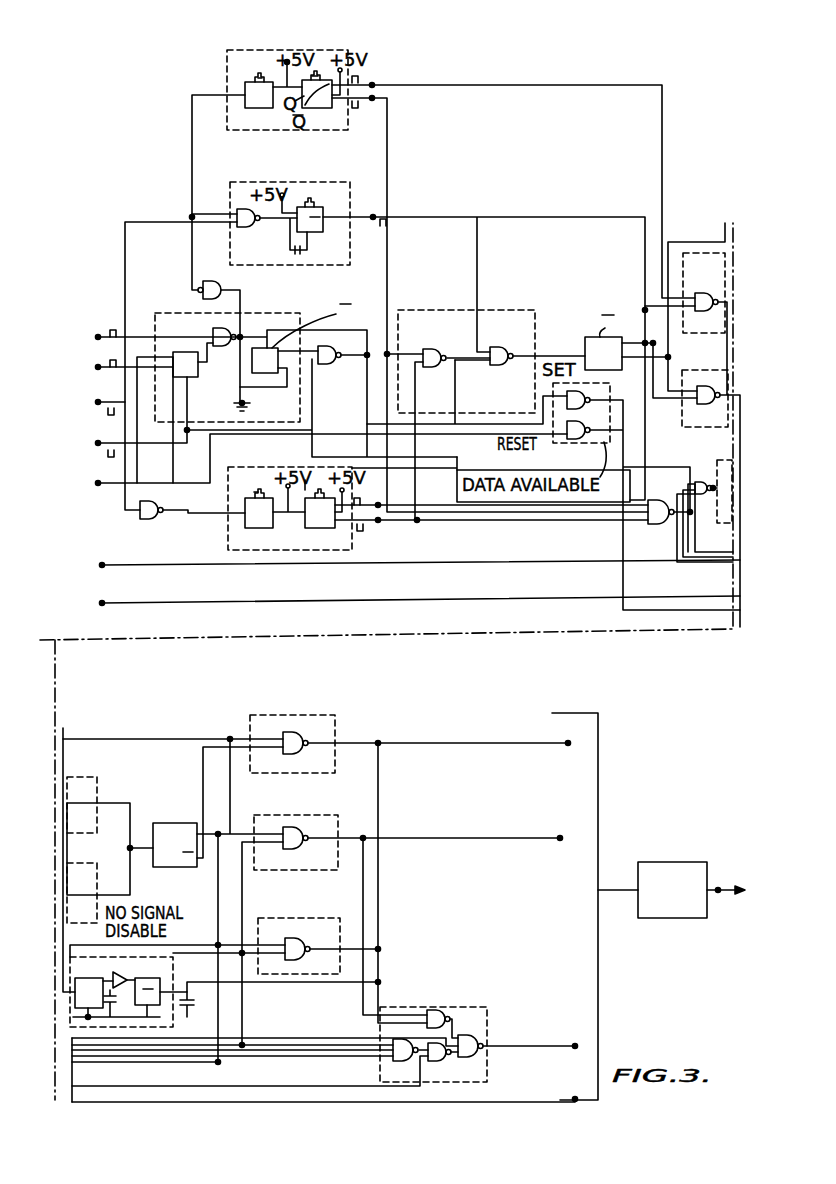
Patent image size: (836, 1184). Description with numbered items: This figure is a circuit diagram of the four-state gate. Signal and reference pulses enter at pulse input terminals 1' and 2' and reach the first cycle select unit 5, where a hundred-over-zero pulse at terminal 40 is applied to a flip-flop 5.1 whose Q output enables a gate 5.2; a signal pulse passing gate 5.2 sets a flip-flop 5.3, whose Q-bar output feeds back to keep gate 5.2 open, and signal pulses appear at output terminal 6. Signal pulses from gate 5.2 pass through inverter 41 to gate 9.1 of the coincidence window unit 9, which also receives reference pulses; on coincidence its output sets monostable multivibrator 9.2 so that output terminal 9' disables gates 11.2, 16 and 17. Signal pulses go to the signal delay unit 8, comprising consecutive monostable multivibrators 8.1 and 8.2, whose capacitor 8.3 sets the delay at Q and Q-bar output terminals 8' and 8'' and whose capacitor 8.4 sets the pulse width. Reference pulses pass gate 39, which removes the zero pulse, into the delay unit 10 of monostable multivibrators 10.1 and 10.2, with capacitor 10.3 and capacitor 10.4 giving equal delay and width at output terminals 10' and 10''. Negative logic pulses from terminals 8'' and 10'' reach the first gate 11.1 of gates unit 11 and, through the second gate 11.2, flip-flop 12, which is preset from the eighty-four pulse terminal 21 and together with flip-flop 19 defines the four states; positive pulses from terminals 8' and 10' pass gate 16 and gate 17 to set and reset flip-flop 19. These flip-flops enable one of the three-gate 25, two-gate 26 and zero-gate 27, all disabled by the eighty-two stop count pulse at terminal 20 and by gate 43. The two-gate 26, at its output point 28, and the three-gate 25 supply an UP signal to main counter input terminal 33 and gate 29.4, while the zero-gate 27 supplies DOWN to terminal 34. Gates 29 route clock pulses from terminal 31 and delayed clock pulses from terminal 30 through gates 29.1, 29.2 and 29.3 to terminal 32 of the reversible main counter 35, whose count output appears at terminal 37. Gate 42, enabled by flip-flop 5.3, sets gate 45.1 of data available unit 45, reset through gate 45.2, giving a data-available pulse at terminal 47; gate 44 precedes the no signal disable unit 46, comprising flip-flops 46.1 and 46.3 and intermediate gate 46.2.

The pulse input terminal 1' is at (78, 323).
The pulse input terminal 2' is at (78, 361).
The first cycle select unit 5 is at (286, 316).
The flip-flop 5.1 is at (198, 373).
The gate 5.2 is at (222, 346).
The flip-flop 5.3 is at (262, 380).
The output terminal 6 is at (192, 217).
The signal delay unit 8 is at (297, 78).
The Q output terminal 8' is at (371, 75).
The Q-bar output terminal 8'' is at (368, 115).
The monostable multivibrator 8.1 is at (252, 110).
The monostable multivibrator 8.2 is at (305, 108).
The capacitor 8.3 is at (260, 78).
The capacitor 8.4 is at (316, 76).
The coincidence window unit 9 is at (286, 204).
The output terminal 9' is at (372, 208).
The gate 9.1 is at (246, 228).
The monostable multivibrator 9.2 is at (310, 234).
The delay unit 10 is at (302, 492).
The Q output terminal 10' is at (373, 490).
The Q-bar output terminal 10'' is at (383, 534).
The monostable multivibrator 10.1 is at (249, 528).
The monostable multivibrator 10.2 is at (308, 528).
The capacitor 10.3 is at (256, 492).
The capacitor 10.4 is at (305, 480).
The gates unit 11 is at (522, 310).
The first gate 11.1 is at (432, 368).
The second gate 11.2 is at (500, 366).
The flip-flop 12 is at (620, 338).
The gate 16 is at (716, 253).
The gate 17 is at (683, 413).
The flip-flop 19 is at (197, 826).
The terminal 20 is at (98, 483).
The 84 pulse terminal 21 is at (98, 443).
The 3 gate 25 is at (320, 918).
The 2 gate 26 is at (320, 815).
The 0 gate 27 is at (318, 715).
The junction 28 is at (365, 834).
The gates 29 is at (470, 1010).
The gate 29.1 is at (398, 1061).
The gate 29.2 is at (437, 1061).
The gate 29.3 is at (478, 1036).
The gate 29.4 is at (447, 1014).
The terminal 30 is at (104, 564).
The terminal 31 is at (102, 603).
The terminal 32 is at (550, 1041).
The main counter input terminal 33 is at (558, 841).
The terminal 34 is at (554, 744).
The main counter 35 is at (676, 862).
The terminal 37 is at (718, 888).
The gate 39 is at (156, 500).
The terminal 40 is at (98, 402).
The inverter 41 is at (222, 283).
The gate 42 is at (332, 348).
The gate 43 is at (663, 498).
The gate 44 is at (700, 482).
The data available unit 45 is at (604, 384).
The set gate 45.1 is at (580, 392).
The reset gate 45.2 is at (580, 438).
The no signal disable unit 46 is at (173, 957).
The flip-flop 46.1 is at (94, 983).
The intermediate gate 46.2 is at (138, 1006).
The flip-flop 46.3 is at (175, 1012).
The terminal 47 is at (587, 1099).